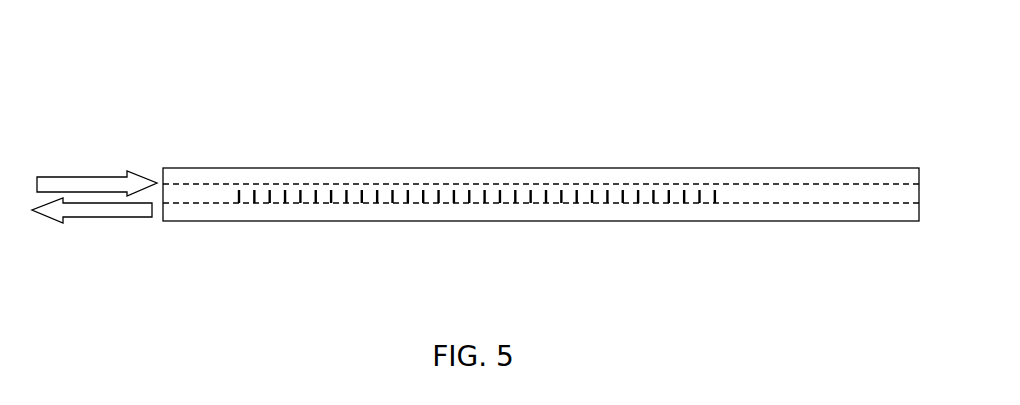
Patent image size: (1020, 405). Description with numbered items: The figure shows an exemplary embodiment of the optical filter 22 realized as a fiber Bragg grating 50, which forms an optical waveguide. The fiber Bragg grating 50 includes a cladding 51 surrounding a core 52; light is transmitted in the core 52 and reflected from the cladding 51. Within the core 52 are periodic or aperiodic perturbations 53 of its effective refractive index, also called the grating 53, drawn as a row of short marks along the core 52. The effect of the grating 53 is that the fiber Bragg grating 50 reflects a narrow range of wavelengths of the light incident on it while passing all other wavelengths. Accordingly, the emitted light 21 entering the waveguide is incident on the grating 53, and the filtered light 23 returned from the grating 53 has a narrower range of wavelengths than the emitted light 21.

The emitted light 21 is at (118, 185).
The optical filter 22 is at (664, 93).
The filtered light 23 is at (120, 209).
The fiber Bragg grating 50 is at (259, 91).
The cladding 51 is at (249, 222).
The core 52 is at (810, 202).
The perturbations 53 is at (607, 192).